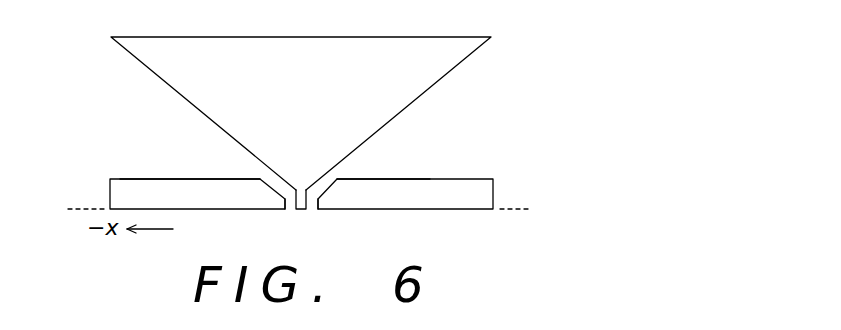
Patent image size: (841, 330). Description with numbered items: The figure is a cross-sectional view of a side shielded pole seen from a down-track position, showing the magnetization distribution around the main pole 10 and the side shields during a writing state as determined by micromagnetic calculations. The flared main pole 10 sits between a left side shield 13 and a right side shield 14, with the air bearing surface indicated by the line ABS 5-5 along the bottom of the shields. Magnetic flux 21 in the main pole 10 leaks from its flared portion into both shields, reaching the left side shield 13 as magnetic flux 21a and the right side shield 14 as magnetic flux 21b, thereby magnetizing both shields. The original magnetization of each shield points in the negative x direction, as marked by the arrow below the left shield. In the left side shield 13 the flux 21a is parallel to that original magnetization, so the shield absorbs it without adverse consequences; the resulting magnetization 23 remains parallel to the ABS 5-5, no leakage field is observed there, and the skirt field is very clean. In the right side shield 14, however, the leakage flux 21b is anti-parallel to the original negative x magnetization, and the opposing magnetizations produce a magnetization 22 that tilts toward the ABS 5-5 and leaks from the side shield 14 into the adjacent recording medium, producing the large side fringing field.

The main pole 10 is at (433, 63).
The left side shield 13 is at (117, 183).
The right side shield 14 is at (493, 180).
The magnetic flux 21 is at (296, 115).
The magnetic flux 21a is at (292, 162).
The magnetic flux 21b is at (332, 207).
The magnetization 22 is at (365, 207).
The magnetization 23 is at (127, 193).
The ABS 5 is at (300, 203).